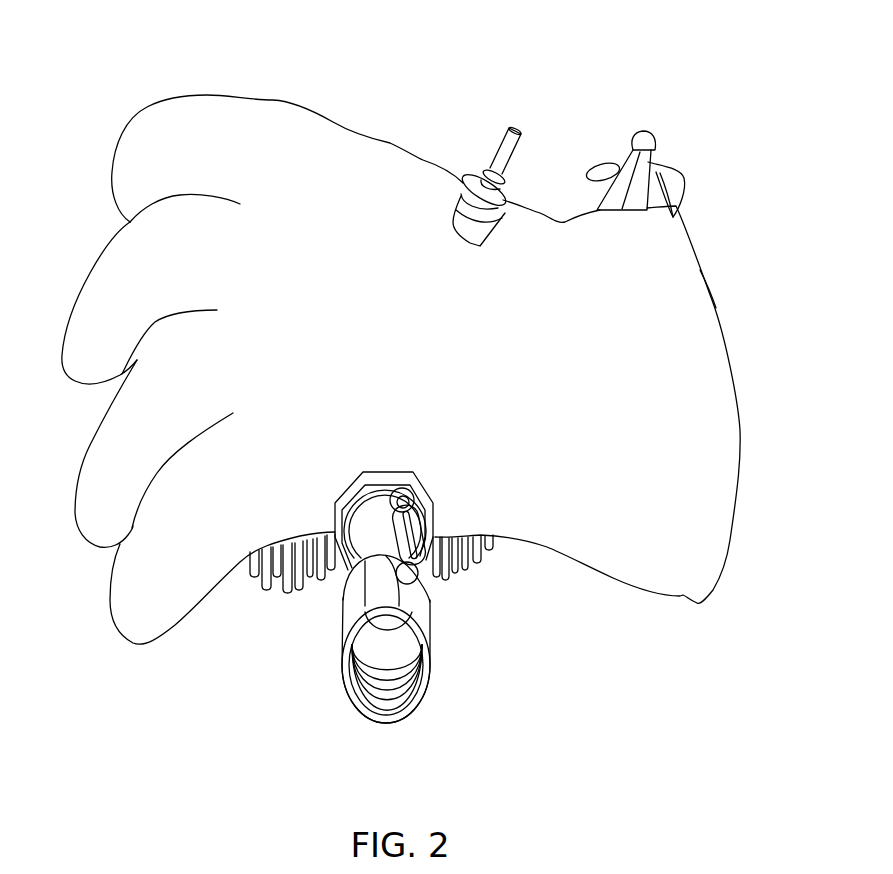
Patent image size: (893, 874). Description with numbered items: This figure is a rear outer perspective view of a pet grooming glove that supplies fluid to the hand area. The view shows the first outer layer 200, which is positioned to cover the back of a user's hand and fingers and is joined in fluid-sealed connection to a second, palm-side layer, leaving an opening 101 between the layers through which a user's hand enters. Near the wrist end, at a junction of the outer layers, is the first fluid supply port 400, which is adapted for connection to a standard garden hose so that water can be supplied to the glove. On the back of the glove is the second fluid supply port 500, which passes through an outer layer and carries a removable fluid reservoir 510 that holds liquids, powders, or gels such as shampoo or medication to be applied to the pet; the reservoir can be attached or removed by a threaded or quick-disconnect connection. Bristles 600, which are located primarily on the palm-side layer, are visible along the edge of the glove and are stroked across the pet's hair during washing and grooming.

The first outer layer 200 is at (311, 104).
The opening 101 is at (713, 272).
The removable fluid reservoir 510 is at (476, 152).
The second fluid supply port 500 is at (535, 149).
The bristles 600 is at (279, 598).
The first fluid supply port 400 is at (439, 691).